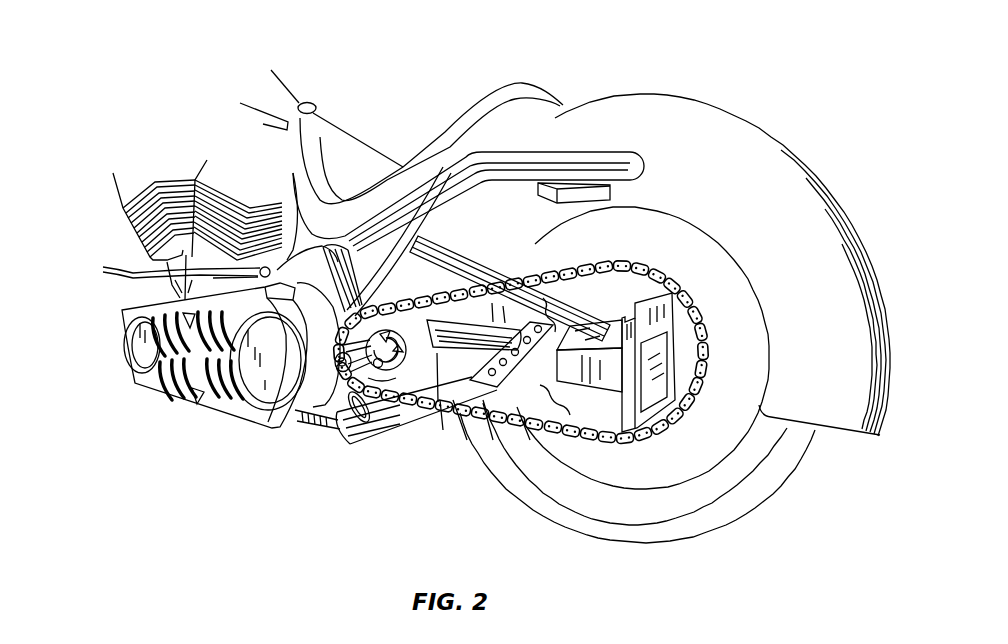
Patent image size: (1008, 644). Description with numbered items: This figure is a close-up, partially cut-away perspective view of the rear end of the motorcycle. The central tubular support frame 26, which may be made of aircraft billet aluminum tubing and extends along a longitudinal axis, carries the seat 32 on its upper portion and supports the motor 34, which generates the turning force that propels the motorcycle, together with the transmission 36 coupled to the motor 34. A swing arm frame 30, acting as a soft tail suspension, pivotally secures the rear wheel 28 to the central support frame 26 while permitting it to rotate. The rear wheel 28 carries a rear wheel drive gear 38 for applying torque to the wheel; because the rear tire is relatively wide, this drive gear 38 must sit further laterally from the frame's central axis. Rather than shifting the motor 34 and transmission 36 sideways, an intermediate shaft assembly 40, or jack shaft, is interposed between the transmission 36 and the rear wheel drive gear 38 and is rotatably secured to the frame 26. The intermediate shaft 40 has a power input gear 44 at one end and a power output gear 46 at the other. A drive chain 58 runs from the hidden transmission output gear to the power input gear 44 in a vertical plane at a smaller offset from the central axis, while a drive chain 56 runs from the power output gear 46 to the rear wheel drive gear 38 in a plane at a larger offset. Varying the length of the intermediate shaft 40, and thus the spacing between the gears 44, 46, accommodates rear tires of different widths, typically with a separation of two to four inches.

The central tubular support frame 26 is at (306, 428).
The rear wheel 28 is at (808, 448).
The swing arm frame 30 is at (476, 266).
The seat 32 is at (364, 158).
The motor 34 is at (107, 297).
The transmission 36 is at (259, 445).
The rear wheel drive gear 38 is at (616, 292).
The intermediate shaft assembly 40 is at (340, 391).
The power input gear 44 is at (405, 318).
The power output gear 46 is at (367, 382).
The drive chain 56 is at (560, 283).
The drive chain 58 is at (410, 385).